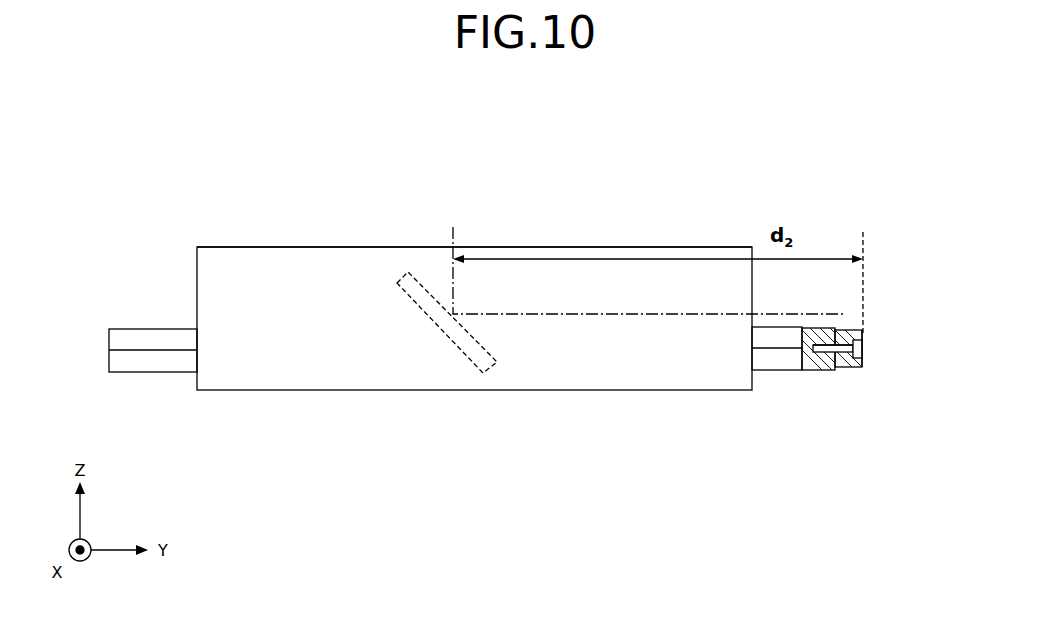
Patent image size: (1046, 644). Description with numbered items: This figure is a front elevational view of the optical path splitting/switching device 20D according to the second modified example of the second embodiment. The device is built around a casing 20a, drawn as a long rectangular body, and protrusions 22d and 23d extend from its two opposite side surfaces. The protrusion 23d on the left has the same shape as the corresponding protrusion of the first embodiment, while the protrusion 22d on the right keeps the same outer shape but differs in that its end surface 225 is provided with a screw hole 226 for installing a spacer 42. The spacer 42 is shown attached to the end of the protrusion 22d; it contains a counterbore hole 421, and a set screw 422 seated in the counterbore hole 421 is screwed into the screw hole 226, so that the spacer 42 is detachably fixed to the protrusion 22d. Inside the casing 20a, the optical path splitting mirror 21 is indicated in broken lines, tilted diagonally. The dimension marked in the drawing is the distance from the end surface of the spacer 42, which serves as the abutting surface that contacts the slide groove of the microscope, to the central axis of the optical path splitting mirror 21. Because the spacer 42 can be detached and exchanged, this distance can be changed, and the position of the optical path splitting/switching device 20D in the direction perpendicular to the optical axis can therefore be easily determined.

The optical path splitting/switching device 20D is at (512, 136).
The casing 20a is at (568, 247).
The optical path splitting mirror 21 is at (412, 283).
The protrusion 23d is at (138, 360).
The protrusion 22d is at (763, 367).
The end surface 225 is at (843, 370).
The screw hole 226 is at (826, 333).
The spacer 42 is at (852, 370).
The counterbore hole 421 is at (872, 333).
The set screw 422 is at (863, 344).